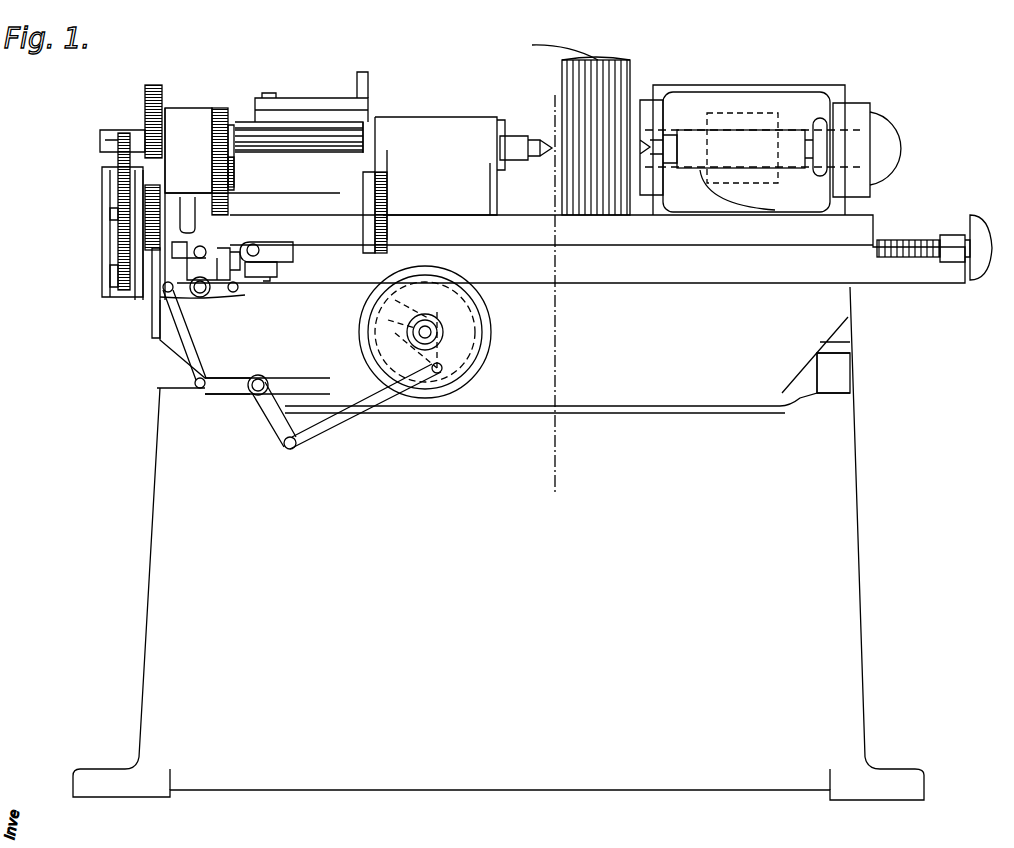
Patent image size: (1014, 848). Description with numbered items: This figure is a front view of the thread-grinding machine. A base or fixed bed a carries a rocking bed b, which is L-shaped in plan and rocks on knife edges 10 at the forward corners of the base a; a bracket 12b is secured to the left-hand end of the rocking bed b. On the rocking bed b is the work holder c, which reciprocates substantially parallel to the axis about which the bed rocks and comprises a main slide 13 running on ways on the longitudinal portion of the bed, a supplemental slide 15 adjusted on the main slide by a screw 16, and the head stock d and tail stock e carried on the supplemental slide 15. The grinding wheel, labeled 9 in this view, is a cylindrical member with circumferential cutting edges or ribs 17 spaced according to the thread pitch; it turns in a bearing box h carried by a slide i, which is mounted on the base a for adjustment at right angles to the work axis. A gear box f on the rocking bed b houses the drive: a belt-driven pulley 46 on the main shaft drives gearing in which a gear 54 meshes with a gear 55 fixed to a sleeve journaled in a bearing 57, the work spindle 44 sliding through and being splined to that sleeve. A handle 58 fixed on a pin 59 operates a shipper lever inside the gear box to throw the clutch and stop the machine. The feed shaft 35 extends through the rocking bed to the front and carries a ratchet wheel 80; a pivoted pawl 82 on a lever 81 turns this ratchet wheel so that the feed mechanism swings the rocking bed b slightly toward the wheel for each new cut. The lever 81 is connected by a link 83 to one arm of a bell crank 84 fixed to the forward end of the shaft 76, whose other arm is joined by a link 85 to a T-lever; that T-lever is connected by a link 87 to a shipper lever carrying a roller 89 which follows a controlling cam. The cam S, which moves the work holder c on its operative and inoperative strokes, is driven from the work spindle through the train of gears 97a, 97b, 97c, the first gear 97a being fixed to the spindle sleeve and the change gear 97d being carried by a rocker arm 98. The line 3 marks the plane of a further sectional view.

The base a is at (498, 543).
The rocking bed b is at (503, 356).
The work holder c is at (571, 249).
The head stock d is at (457, 185).
The tail stock e is at (750, 152).
The gear box f is at (270, 204).
The bearing box h is at (742, 140).
The slide i is at (838, 85).
The cam s is at (240, 238).
The section line 3 is at (555, 492).
The pulley 9 is at (612, 60).
The knife edges 10 is at (853, 372).
The bracket 12b is at (150, 325).
The main slide 13 is at (851, 261).
The supplemental slide 15 is at (600, 224).
The screw 16 is at (908, 245).
The cutting edges or ribs 17 is at (553, 47).
The feed shaft 35 is at (440, 338).
The work spindle 44 is at (345, 140).
The pulley 46 is at (110, 252).
The gear 54 is at (153, 203).
The gear 55 is at (145, 92).
The bearing 57 is at (187, 115).
The handle 58 is at (312, 98).
The pin 59 is at (270, 92).
The shaft 76 is at (252, 397).
The ratchet wheel 80 is at (468, 300).
The lever 81 is at (362, 335).
The pawl 82 is at (375, 287).
The link 83 is at (348, 412).
The bell crank 84 is at (278, 440).
The link 85 is at (185, 346).
The link 87 is at (207, 245).
The roller 89 is at (176, 240).
The gear 97a is at (221, 105).
The gear 97b is at (231, 122).
The gear 97c is at (116, 152).
The change gear 97d is at (112, 202).
The rocker arm 98 is at (137, 220).